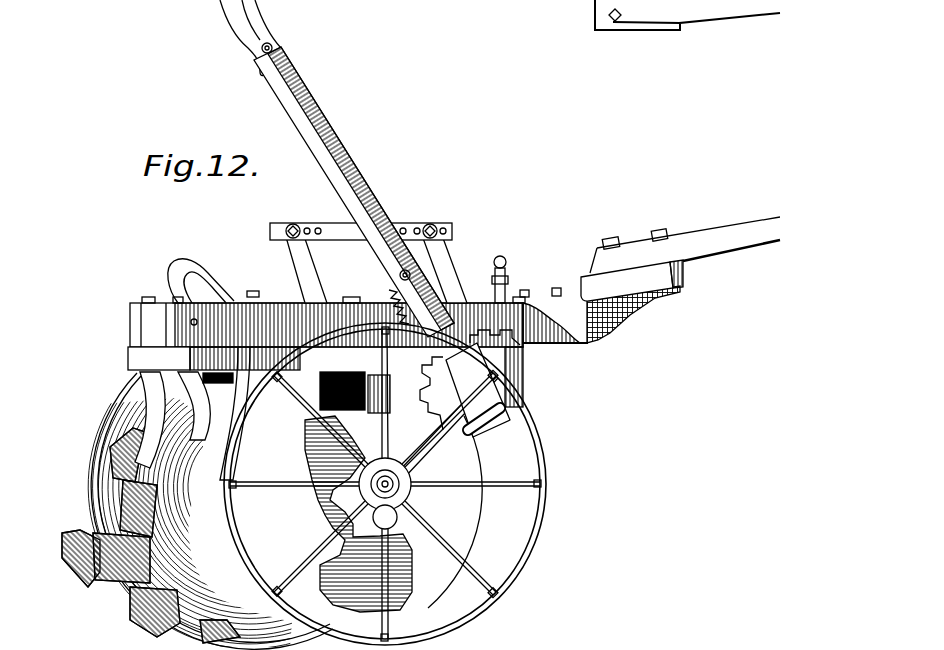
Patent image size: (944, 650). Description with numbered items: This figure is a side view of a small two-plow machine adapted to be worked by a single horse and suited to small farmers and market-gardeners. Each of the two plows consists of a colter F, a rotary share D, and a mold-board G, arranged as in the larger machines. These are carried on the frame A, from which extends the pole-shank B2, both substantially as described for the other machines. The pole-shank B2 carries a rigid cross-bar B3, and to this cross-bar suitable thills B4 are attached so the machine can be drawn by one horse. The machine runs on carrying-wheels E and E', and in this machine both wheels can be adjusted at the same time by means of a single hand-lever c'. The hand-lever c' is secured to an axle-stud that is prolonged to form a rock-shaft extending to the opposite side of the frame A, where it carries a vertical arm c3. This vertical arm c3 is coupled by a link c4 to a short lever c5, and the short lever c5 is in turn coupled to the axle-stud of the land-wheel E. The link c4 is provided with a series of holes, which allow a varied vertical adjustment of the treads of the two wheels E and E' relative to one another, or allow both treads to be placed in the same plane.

The hand-lever c' is at (365, 239).
The vertical arm c3 is at (443, 266).
The link c4 is at (361, 222).
The short lever c5 is at (308, 266).
The pole-shank B2 is at (560, 345).
The cross-bar B3 is at (632, 301).
The thills B4 is at (685, 240).
The frame A is at (326, 360).
The land-wheel E is at (165, 369).
The carrying-wheel E' is at (437, 514).
The rotary share D is at (285, 501).
The colter F is at (385, 484).
The mold-board G is at (78, 544).